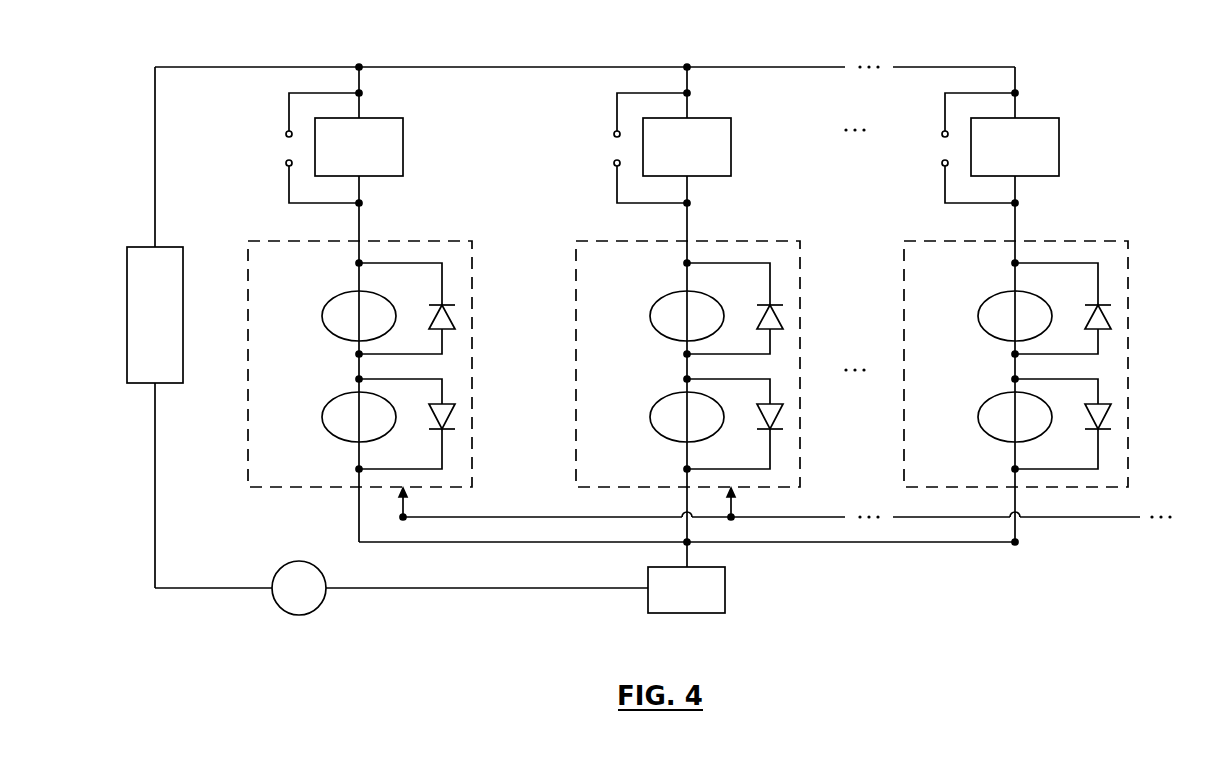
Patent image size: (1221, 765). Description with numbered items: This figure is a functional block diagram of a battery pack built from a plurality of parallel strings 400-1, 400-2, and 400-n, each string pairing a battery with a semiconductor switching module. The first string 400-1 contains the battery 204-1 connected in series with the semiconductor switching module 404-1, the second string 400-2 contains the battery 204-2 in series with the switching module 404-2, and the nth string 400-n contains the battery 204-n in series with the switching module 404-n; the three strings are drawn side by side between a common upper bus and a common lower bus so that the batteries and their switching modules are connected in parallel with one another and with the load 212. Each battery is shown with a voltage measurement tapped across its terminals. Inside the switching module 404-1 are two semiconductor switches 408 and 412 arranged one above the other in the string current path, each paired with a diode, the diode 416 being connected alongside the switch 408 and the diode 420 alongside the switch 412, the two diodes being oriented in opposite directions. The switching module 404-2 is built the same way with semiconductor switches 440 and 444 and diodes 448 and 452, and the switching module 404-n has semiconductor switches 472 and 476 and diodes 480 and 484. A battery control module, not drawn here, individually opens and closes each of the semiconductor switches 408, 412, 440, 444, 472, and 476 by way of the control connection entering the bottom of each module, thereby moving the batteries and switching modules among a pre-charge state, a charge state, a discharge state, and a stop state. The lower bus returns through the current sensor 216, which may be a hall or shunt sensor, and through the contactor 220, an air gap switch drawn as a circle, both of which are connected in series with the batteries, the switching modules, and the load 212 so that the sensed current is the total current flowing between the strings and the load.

The string 400-1 is at (359, 30).
The string 400-2 is at (687, 30).
The string 400-n is at (1015, 30).
The battery 204-1 is at (375, 176).
The battery 204-2 is at (703, 176).
The battery 204-n is at (1031, 176).
The semiconductor switching module 404-1 is at (472, 258).
The semiconductor switching module 404-2 is at (800, 258).
The semiconductor switching module 404-n is at (1128, 258).
The semiconductor switch 408 is at (323, 316).
The semiconductor switch 412 is at (323, 417).
The diode 416 is at (455, 322).
The diode 420 is at (455, 410).
The semiconductor switch 440 is at (651, 316).
The semiconductor switch 444 is at (651, 417).
The diode 448 is at (783, 322).
The diode 452 is at (783, 410).
The semiconductor switch 472 is at (979, 316).
The semiconductor switch 476 is at (979, 417).
The diode 480 is at (1111, 322).
The diode 484 is at (1111, 410).
The load 212 is at (127, 318).
The current sensor 216 is at (648, 607).
The contactor 220 is at (299, 561).